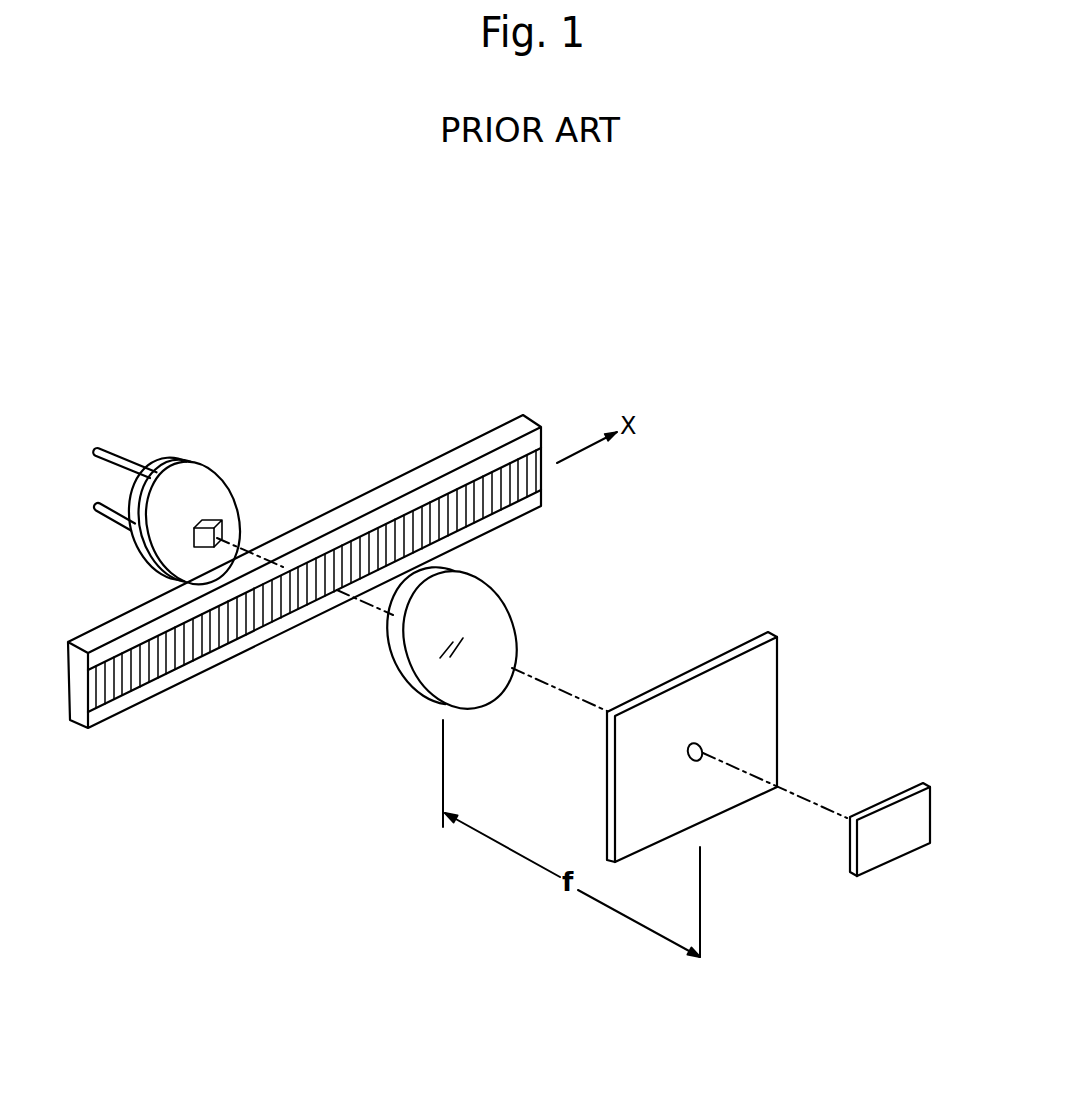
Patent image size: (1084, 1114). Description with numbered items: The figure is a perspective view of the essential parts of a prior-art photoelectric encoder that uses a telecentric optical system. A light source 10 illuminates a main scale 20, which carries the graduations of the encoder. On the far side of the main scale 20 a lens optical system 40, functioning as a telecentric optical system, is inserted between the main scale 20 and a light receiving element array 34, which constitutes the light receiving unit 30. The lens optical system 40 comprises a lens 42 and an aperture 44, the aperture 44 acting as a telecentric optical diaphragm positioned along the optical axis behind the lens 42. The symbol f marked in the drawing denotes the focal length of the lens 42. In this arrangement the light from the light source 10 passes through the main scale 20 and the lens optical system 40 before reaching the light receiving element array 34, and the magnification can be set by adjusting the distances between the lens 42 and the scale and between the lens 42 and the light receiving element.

The light source 10 is at (205, 488).
The main scale 20 is at (142, 703).
The light receiving unit 30 is at (906, 762).
The light receiving element array 34 is at (848, 856).
The lens optical system 40 is at (556, 541).
The lens 42 is at (506, 597).
The aperture 44 is at (697, 744).